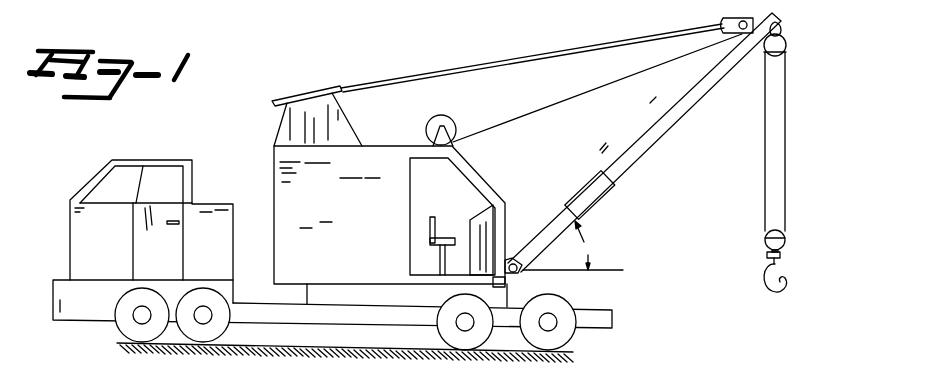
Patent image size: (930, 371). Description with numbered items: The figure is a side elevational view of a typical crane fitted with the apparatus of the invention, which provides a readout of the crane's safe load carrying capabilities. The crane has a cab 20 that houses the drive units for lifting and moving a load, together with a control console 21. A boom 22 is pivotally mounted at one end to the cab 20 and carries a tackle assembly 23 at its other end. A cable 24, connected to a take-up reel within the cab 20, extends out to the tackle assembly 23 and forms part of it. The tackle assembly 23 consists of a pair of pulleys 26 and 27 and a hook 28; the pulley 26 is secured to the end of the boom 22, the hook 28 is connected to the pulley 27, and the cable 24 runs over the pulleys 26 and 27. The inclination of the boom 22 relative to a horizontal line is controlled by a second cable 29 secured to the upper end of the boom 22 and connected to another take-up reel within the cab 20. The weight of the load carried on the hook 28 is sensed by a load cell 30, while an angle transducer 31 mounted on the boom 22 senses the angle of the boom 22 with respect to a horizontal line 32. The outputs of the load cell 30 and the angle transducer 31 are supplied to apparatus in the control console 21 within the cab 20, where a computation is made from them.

The cab 20 is at (274, 162).
The control console 21 is at (482, 211).
The boom 22 is at (657, 143).
The tackle assembly 23 is at (786, 137).
The cable 24 is at (592, 92).
The pulley 26 is at (786, 44).
The pulley 27 is at (783, 243).
The hook 28 is at (787, 292).
The cable 29 is at (432, 61).
The load cell 30 is at (782, 255).
The angle transducer 31 is at (603, 201).
The horizontal line 32 is at (615, 270).